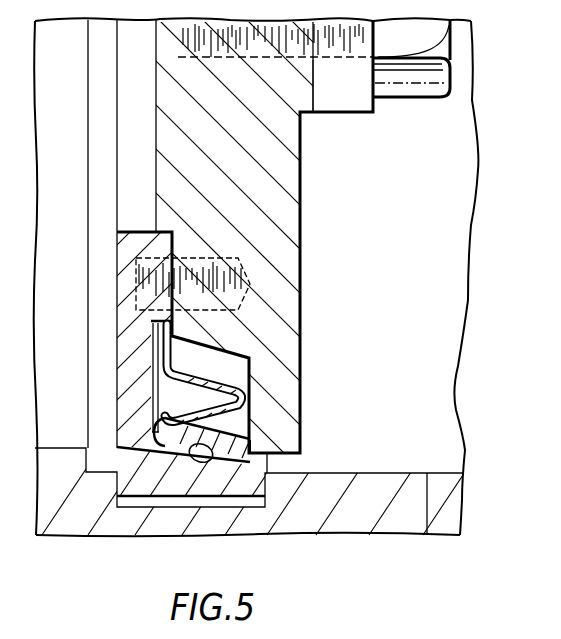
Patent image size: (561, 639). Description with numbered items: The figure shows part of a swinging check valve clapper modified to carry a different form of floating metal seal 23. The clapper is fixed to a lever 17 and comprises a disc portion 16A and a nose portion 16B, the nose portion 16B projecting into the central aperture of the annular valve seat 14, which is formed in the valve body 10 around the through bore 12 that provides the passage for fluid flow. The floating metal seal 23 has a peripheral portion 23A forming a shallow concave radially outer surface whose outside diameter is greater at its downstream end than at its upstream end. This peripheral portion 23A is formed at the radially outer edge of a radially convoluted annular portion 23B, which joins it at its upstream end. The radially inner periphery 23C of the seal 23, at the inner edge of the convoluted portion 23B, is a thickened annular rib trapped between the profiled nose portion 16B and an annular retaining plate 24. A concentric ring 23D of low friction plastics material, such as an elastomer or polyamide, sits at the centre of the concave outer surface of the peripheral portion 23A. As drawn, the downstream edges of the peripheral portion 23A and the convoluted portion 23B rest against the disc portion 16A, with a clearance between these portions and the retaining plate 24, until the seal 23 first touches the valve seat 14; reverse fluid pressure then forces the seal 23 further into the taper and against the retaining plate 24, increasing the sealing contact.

The valve body 10 is at (335, 520).
The through bore 12 is at (427, 535).
The valve seat 14 is at (183, 484).
The disc portion 16A is at (291, 311).
The nose portion 16B is at (166, 176).
The lever 17 is at (351, 95).
The floating metal seal 23 is at (153, 431).
The peripheral portion 23A is at (245, 443).
The radially convoluted annular portion 23B is at (250, 374).
The radially inner periphery 23C is at (151, 327).
The concentric ring of low friction plastics material 23D is at (200, 452).
The annular retaining plate 24 is at (128, 378).